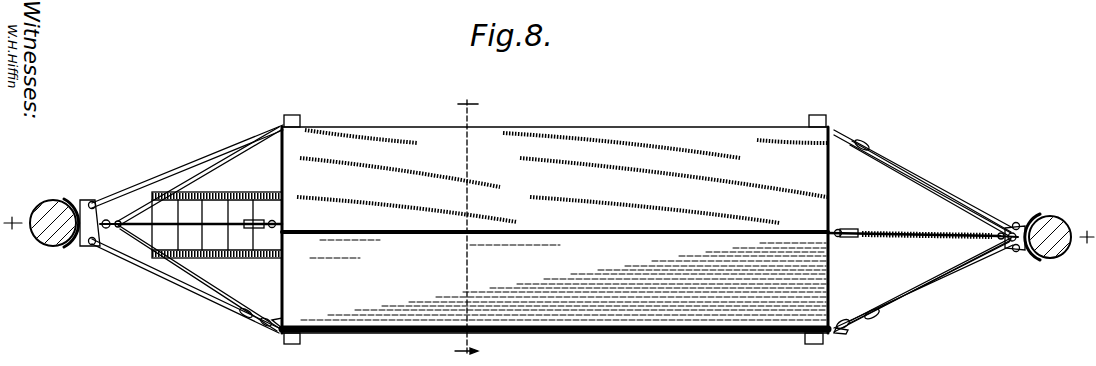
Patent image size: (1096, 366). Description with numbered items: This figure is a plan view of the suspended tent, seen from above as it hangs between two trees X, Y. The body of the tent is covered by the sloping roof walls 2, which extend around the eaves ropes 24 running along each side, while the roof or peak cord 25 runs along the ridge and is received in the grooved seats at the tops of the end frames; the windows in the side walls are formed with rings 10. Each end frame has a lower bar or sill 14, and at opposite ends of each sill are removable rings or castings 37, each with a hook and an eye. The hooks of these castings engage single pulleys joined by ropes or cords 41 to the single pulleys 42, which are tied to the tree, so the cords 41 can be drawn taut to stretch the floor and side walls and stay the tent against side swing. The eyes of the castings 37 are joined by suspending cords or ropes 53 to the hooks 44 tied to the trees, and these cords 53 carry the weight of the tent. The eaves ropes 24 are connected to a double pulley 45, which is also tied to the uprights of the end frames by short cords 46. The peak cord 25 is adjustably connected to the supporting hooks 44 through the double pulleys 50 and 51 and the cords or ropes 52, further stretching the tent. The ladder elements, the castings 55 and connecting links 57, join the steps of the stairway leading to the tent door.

The sloping roof walls 2 is at (656, 154).
The rings 10 is at (466, 220).
The lower bar or sill 14 is at (289, 343).
The eaves ropes 24 is at (266, 325).
The roof or peak cord 25 is at (272, 240).
The removable rings or castings 37 is at (276, 322).
The ropes or cords 41 is at (152, 168).
The single pulleys 42 is at (91, 200).
The hooks 44 is at (108, 216).
The double pulley 45 is at (246, 318).
The short cords 46 is at (846, 332).
The double pulley 50 is at (560, 235).
The double pulley 51 is at (217, 225).
The cords or ropes 52 is at (212, 230).
The suspending cords or ropes 53 is at (200, 292).
The castings 55 is at (240, 212).
The connecting links 57 is at (216, 193).
The tree X is at (56, 244).
The tree Y is at (1036, 256).